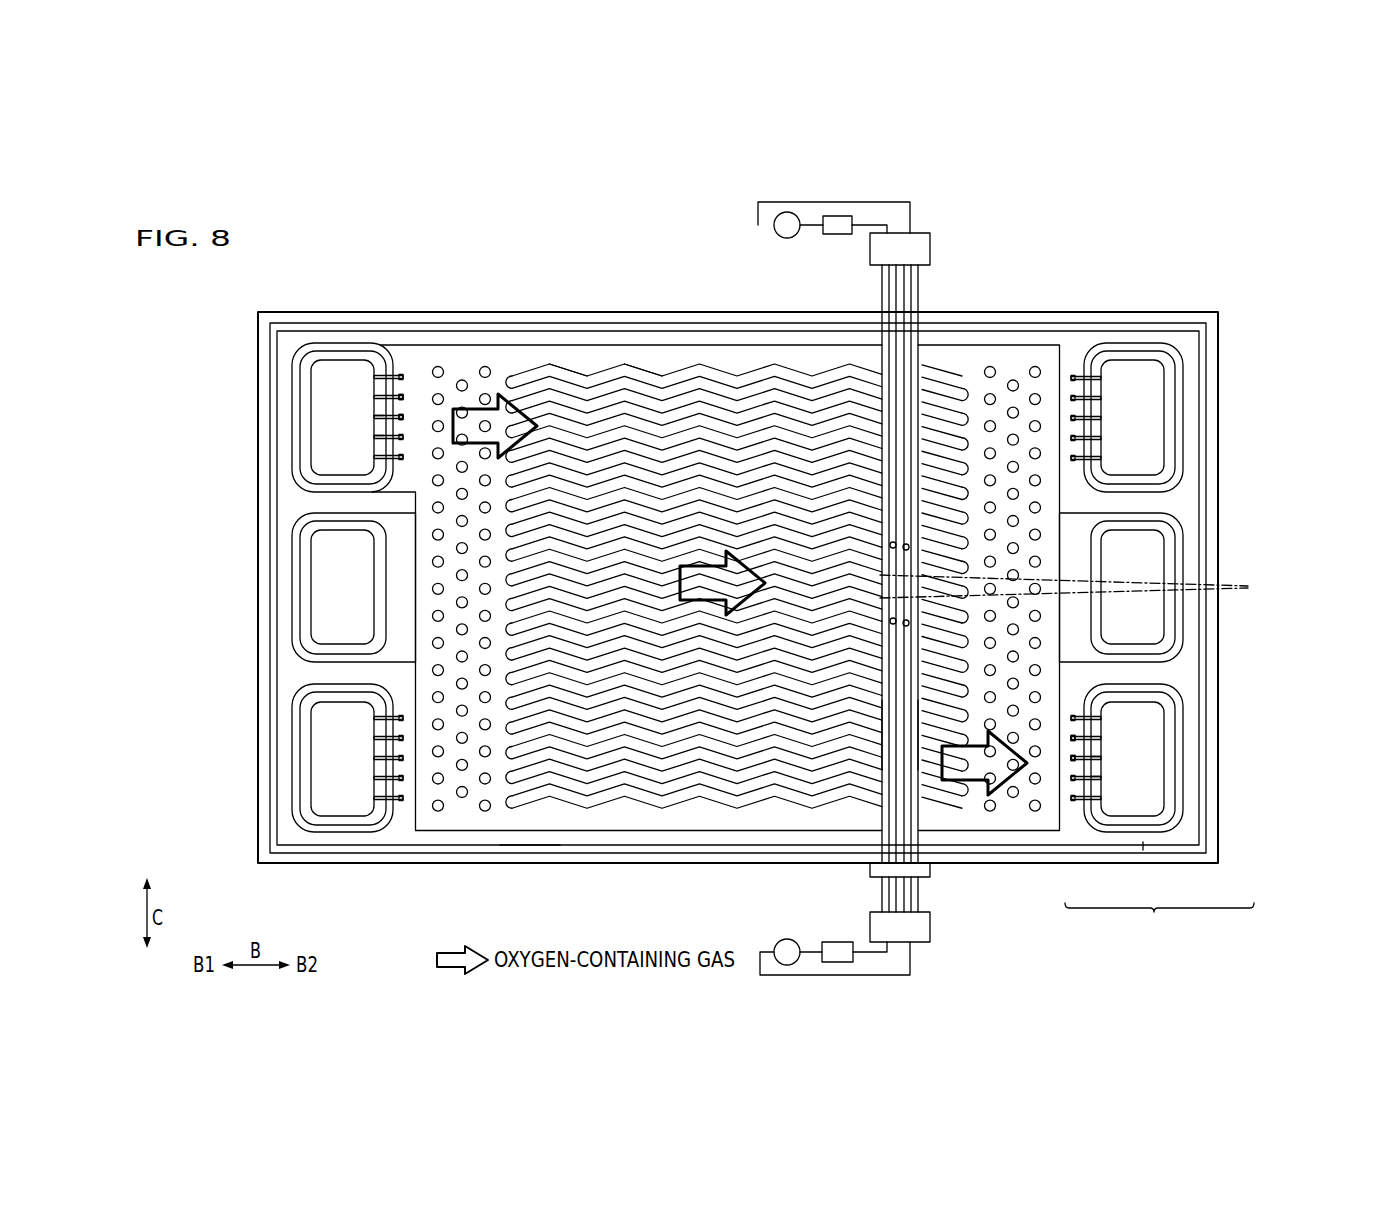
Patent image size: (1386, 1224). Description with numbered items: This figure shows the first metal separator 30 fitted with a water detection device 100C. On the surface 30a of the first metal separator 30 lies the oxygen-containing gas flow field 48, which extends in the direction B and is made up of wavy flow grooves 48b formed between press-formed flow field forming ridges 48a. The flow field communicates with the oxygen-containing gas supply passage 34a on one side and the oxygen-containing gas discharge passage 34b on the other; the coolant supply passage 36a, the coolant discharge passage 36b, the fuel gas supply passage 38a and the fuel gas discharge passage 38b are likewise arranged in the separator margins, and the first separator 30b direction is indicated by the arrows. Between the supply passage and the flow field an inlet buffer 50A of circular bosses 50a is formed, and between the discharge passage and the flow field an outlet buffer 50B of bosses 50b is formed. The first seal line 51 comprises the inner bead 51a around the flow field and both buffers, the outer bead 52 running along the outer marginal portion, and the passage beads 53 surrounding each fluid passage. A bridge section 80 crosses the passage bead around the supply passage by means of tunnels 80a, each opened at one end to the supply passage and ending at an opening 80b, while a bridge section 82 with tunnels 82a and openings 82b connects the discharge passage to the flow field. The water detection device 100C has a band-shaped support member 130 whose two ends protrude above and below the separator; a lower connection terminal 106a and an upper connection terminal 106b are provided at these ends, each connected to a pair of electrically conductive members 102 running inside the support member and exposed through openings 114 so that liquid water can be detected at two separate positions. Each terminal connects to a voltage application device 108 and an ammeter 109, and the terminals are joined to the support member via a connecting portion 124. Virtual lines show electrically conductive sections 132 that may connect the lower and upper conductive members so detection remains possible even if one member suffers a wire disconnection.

The first metal separator 30 is at (1172, 288).
The surface 30a is at (532, 840).
The second separator 30b is at (595, 834).
The oxygen-containing gas supply passage 34a is at (327, 388).
The oxygen-containing gas discharge passage 34b is at (1189, 793).
The coolant supply passage 36a is at (327, 588).
The coolant discharge passage 36b is at (1160, 637).
The fuel gas supply passage 38a is at (1145, 404).
The fuel gas discharge passage 38b is at (327, 775).
The oxygen-containing gas flow field 48 is at (652, 274).
The flow field forming ridge 48a is at (572, 400).
The flow groove 48b is at (633, 385).
The boss 50a is at (462, 797).
The inlet buffer 50A is at (486, 822).
The outlet buffer 50B is at (989, 352).
The boss 50b is at (1013, 379).
The first seal line 51 is at (1159, 918).
The inner bead 51a is at (1070, 830).
The outer bead 52 is at (1143, 850).
The passage bead 53 is at (294, 472).
The bridge section 80 is at (397, 368).
The tunnel 80a is at (374, 437).
The opening 80b is at (404, 418).
The bridge section 82 is at (1067, 814).
The tunnel 82a is at (1102, 773).
The opening 82b is at (1071, 758).
The water detection device 100C is at (942, 245).
The electrically conductive member 102 is at (880, 361).
The connection terminal 106a is at (920, 928).
The connection terminal 106b is at (880, 247).
The voltage application device 108 is at (835, 235).
The ammeter 109 is at (776, 231).
The opening 114 is at (1120, 551).
The connecting portion 124 is at (930, 878).
The support member 130 is at (922, 731).
The electrically conductive section 132 is at (1082, 588).